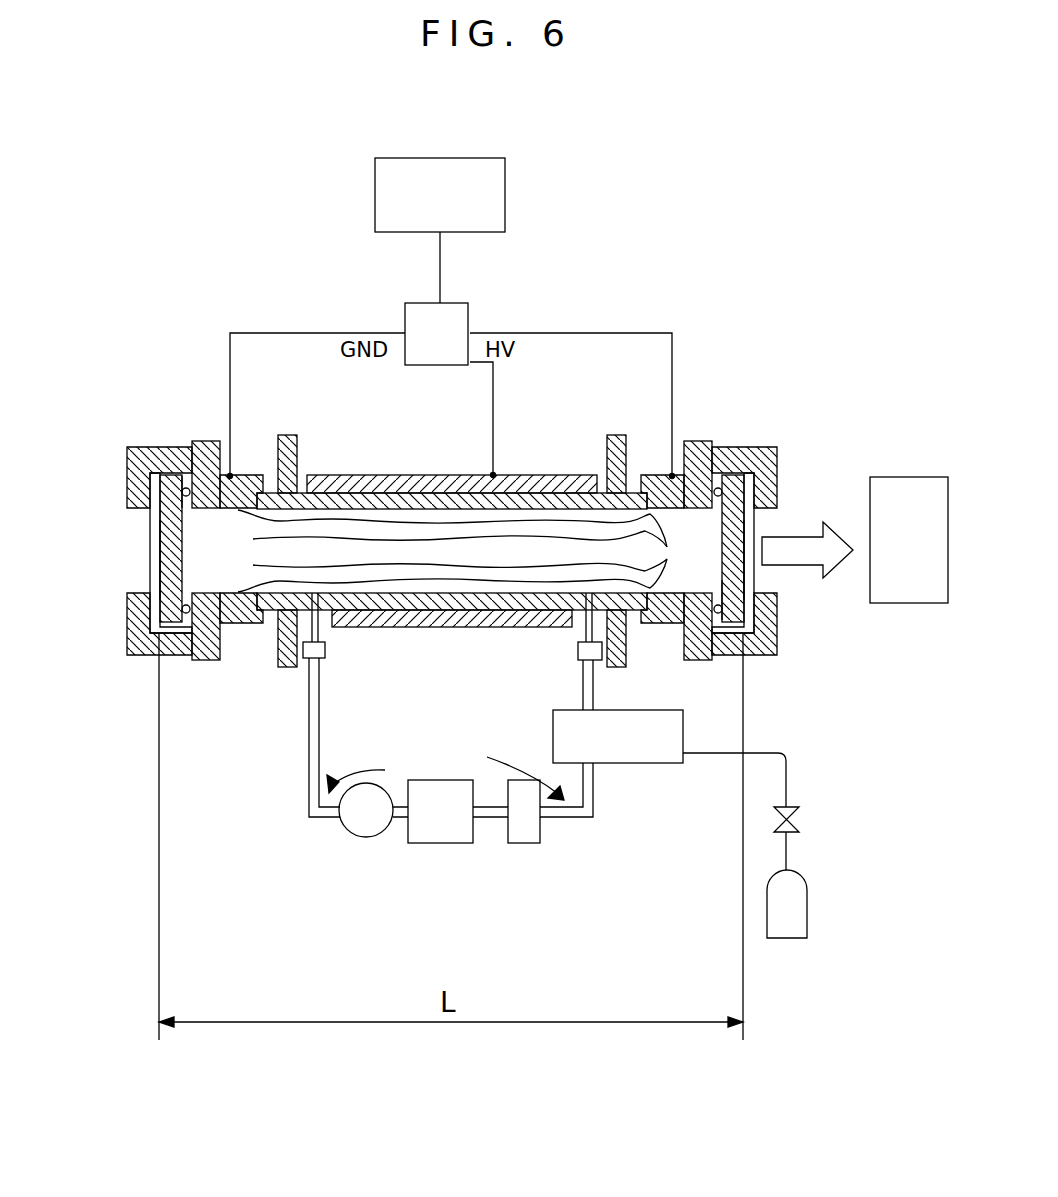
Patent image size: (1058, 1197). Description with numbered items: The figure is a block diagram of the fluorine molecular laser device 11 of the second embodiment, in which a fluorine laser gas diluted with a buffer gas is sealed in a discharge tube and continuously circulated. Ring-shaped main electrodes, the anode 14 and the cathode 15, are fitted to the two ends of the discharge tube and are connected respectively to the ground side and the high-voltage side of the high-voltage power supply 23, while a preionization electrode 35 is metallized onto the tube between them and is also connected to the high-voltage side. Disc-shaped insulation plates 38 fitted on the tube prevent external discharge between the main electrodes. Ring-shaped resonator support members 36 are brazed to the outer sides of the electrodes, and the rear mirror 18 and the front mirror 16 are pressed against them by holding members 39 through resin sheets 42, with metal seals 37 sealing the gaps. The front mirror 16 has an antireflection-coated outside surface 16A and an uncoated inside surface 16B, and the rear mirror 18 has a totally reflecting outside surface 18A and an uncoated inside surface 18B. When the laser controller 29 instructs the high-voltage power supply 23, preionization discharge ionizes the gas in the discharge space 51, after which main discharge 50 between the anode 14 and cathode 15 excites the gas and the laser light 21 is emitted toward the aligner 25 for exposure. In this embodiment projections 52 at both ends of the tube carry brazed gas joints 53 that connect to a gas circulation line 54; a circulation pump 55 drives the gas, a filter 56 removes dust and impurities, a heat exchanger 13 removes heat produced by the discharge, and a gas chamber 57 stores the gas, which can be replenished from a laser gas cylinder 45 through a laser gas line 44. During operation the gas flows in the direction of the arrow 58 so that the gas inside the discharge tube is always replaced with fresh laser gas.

The fluorine molecular laser device 11 is at (733, 334).
The heat exchanger 13 is at (440, 843).
The anode 14 is at (247, 475).
The cathode 15 is at (660, 475).
The front mirror 16 is at (741, 475).
The outside surface of front mirror 16A is at (745, 570).
The inside surface of front mirror 16B is at (716, 570).
The rear mirror 18 is at (160, 548).
The outside surface of rear mirror 18A is at (160, 578).
The inside surface of rear mirror 18B is at (190, 522).
The laser light 21 is at (840, 520).
The high-voltage power supply 23 is at (468, 303).
The aligner 25 is at (908, 605).
The laser controller 29 is at (505, 196).
The preionization electrode 35 is at (401, 475).
The resonator support member 36 is at (210, 441).
The metal seal 37 is at (190, 645).
The insulation plate 38 is at (290, 435).
The holding member 39 is at (127, 630).
The resin sheet 42 is at (149, 447).
The laser gas line 44 is at (786, 777).
The laser gas cylinder 45 is at (807, 903).
The main discharge 50 is at (472, 551).
The discharge space 51 is at (245, 555).
The projection 52 is at (322, 626).
The gas joint 53 is at (325, 652).
The gas circulation line 54 is at (320, 715).
The circulation pump 55 is at (366, 837).
The filter 56 is at (524, 843).
The gas chamber 57 is at (651, 765).
The arrow 58 is at (445, 764).